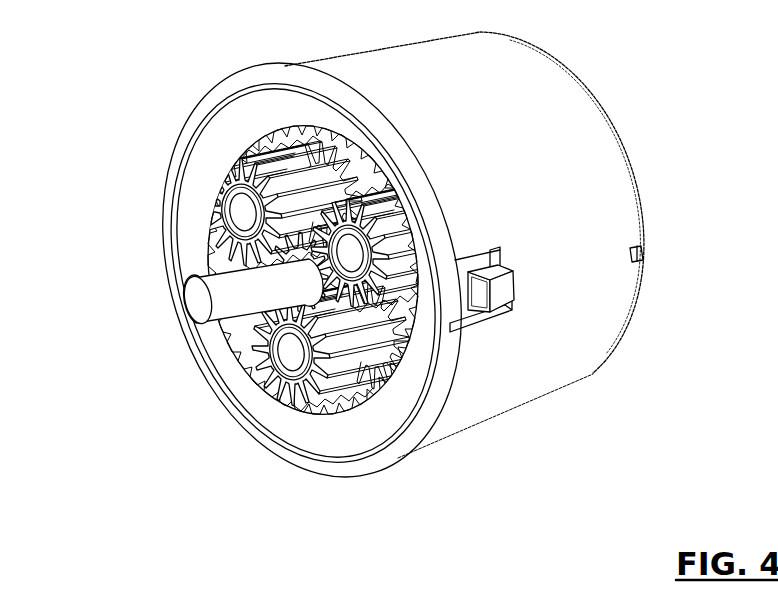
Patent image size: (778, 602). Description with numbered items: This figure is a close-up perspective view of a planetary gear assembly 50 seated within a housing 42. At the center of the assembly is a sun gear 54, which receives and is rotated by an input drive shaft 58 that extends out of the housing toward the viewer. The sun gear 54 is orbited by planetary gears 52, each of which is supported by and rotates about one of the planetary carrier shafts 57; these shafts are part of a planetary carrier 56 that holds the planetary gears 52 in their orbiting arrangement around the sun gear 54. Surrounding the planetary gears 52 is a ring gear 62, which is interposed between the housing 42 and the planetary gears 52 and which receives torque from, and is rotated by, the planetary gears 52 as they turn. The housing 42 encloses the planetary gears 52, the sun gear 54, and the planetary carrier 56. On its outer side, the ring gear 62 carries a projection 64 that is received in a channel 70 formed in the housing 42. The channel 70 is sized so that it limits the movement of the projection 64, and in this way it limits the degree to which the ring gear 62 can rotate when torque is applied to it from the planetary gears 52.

The housing 42 is at (520, 245).
The planetary gear assembly 50 is at (646, 85).
The planetary gears 52 is at (249, 145).
The sun gear 54 is at (201, 240).
The planetary carrier 56 is at (282, 372).
The planetary carrier shafts 57 is at (401, 205).
The input drive shaft 58 is at (189, 292).
The ring gear 62 is at (302, 306).
The projection 64 is at (552, 340).
The channel 70 is at (433, 385).